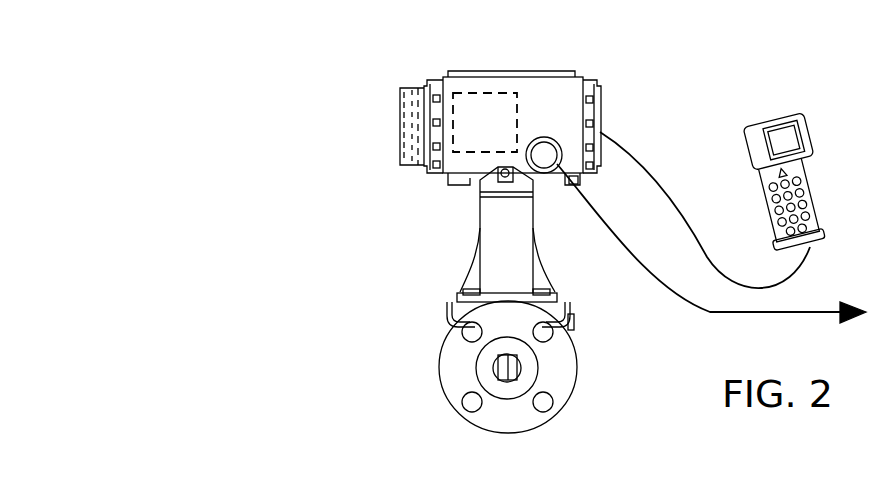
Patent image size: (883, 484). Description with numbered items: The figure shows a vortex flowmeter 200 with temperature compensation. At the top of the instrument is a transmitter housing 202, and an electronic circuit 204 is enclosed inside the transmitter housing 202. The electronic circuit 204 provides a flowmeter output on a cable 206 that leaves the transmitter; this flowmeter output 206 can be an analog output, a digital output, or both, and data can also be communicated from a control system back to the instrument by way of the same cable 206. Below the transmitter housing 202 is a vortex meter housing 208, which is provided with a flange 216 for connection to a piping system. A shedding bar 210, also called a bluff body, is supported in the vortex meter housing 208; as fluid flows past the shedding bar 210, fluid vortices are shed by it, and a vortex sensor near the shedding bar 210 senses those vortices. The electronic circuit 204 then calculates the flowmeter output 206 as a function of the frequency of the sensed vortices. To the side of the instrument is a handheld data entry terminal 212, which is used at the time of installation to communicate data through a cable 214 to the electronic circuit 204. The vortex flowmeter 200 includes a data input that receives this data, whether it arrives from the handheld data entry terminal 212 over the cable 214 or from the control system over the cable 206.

The vortex flowmeter 200 is at (300, 185).
The transmitter housing 202 is at (445, 173).
The electronic circuit 204 is at (403, 85).
The cable 206 is at (710, 312).
The vortex meter housing 208 is at (447, 320).
The shedding bar 210 is at (517, 370).
The handheld data entry terminal 212 is at (767, 115).
The cable 214 is at (669, 181).
The flange 216 is at (438, 370).